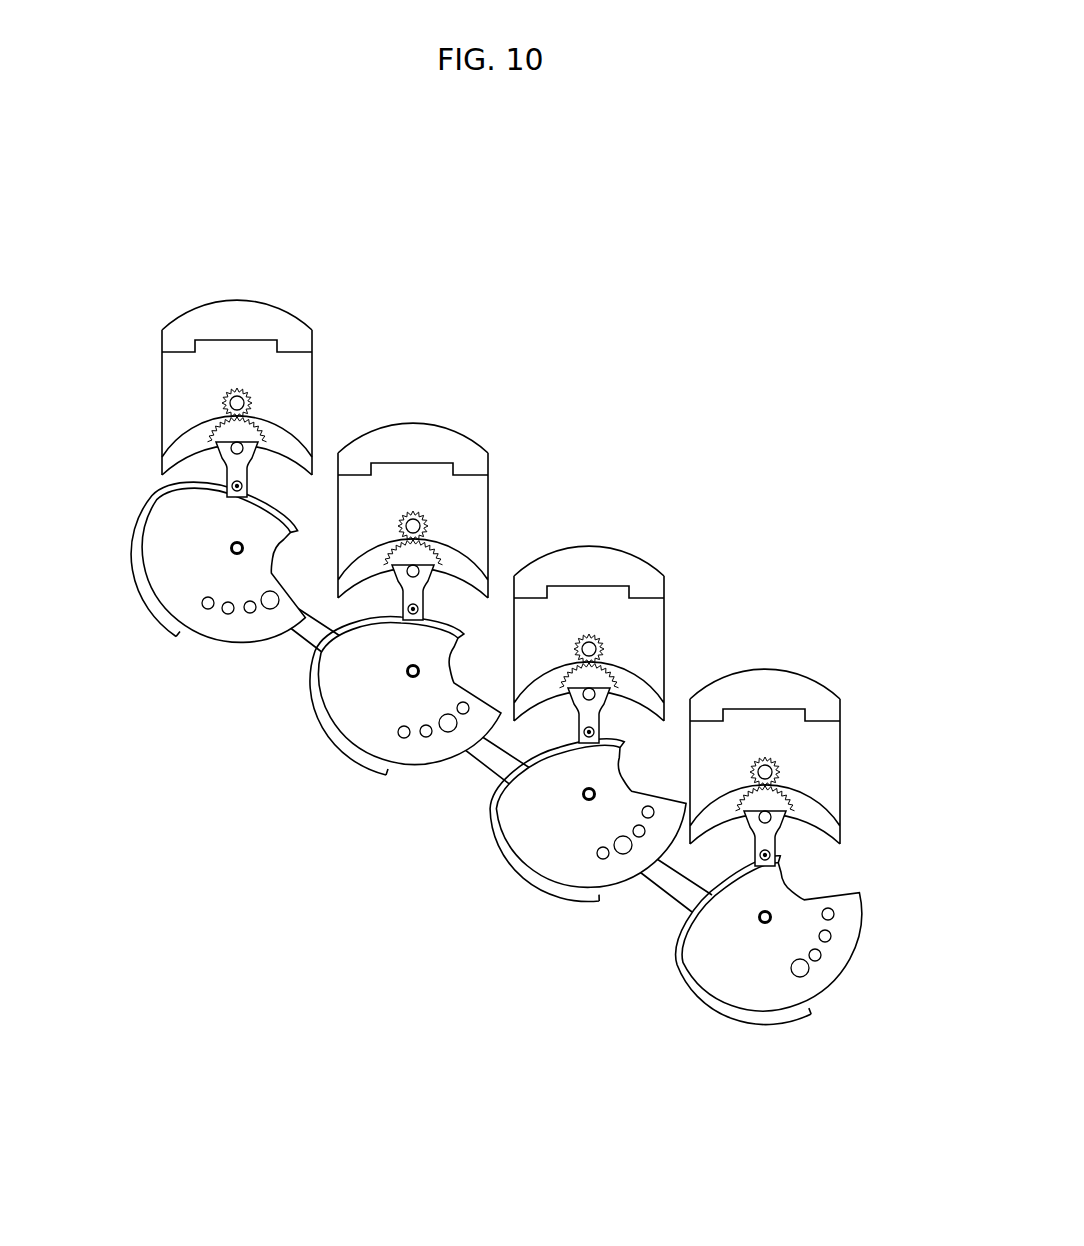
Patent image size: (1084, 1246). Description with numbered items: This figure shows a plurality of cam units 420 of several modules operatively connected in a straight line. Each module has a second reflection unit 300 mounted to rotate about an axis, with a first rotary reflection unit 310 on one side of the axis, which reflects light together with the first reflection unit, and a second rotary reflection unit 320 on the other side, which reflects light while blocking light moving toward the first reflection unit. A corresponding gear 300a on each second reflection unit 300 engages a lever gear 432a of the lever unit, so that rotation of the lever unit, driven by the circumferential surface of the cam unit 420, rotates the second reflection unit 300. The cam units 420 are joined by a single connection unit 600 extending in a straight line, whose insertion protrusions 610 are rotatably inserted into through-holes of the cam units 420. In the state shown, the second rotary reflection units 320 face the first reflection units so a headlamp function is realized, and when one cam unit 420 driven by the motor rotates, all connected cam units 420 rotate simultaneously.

The second reflection unit 300 is at (442, 526).
The corresponding gear 300a is at (546, 503).
The second rotary reflection unit 320 is at (198, 364).
The first rotary reflection unit 310 is at (178, 446).
The lever gear 432a is at (519, 581).
The cam unit 420 is at (215, 625).
The insertion protrusion 610 is at (270, 610).
The connection unit 600 is at (680, 892).